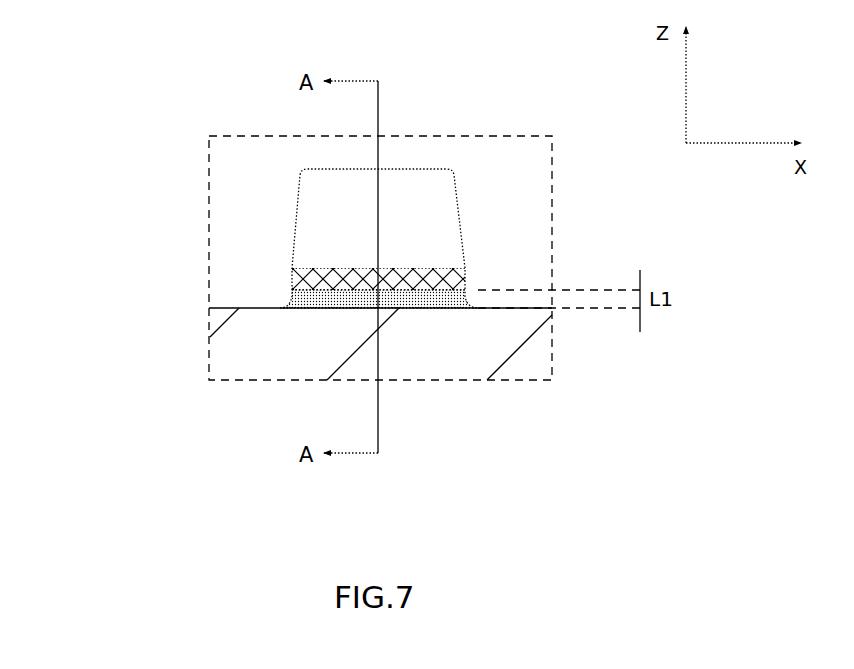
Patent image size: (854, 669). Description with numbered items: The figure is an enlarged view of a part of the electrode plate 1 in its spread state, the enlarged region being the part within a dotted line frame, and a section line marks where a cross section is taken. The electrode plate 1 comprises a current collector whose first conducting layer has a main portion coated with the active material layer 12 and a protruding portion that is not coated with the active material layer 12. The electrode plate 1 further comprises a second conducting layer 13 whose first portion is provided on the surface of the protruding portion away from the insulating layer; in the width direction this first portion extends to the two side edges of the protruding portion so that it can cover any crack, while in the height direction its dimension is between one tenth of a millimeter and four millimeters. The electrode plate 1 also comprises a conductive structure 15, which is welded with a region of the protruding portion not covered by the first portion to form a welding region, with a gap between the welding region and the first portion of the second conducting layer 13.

The electrode plate 1 is at (121, 160).
The active material layer 12 is at (460, 352).
The second conducting layer 13 is at (287, 302).
The conductive structure 15 is at (435, 230).